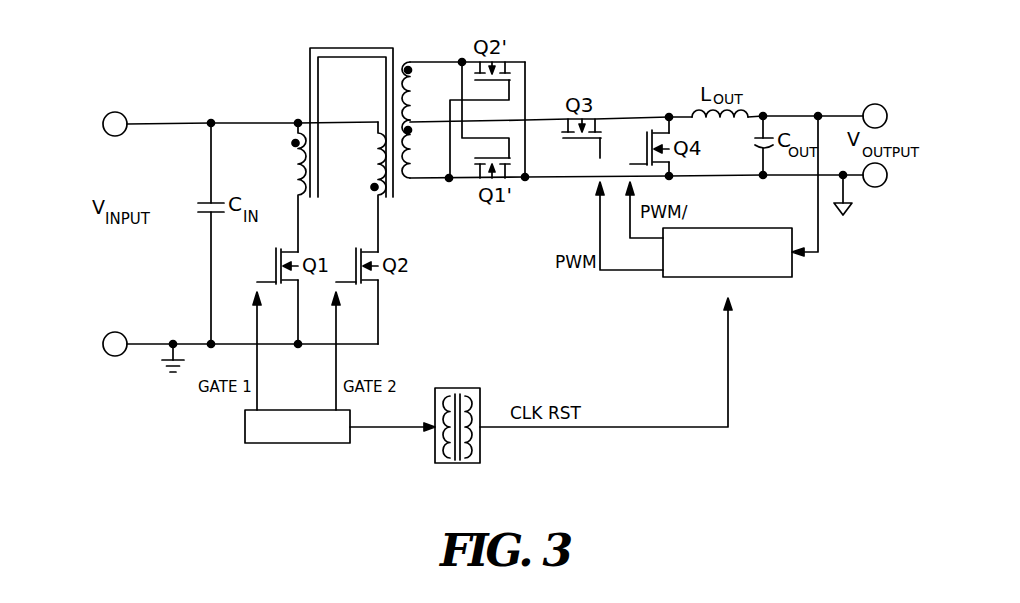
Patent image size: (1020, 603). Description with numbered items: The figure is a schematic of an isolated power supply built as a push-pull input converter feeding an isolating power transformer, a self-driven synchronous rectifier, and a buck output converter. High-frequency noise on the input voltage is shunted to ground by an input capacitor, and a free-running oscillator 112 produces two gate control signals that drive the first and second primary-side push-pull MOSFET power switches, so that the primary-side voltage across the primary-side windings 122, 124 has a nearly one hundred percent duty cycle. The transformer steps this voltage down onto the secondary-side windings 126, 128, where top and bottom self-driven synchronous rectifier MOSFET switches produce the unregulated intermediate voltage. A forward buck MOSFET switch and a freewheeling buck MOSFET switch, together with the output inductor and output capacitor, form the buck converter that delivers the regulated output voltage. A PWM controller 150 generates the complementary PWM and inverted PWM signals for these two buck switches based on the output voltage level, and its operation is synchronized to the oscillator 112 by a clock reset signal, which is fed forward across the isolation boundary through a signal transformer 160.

The free-running oscillator 112 is at (245, 426).
The primary-side winding 122 is at (296, 164).
The primary-side winding 124 is at (376, 165).
The secondary-side winding 126 is at (413, 153).
The secondary-side winding 128 is at (409, 80).
The PWM controller 150 is at (752, 278).
The signal transformer 160 is at (445, 388).